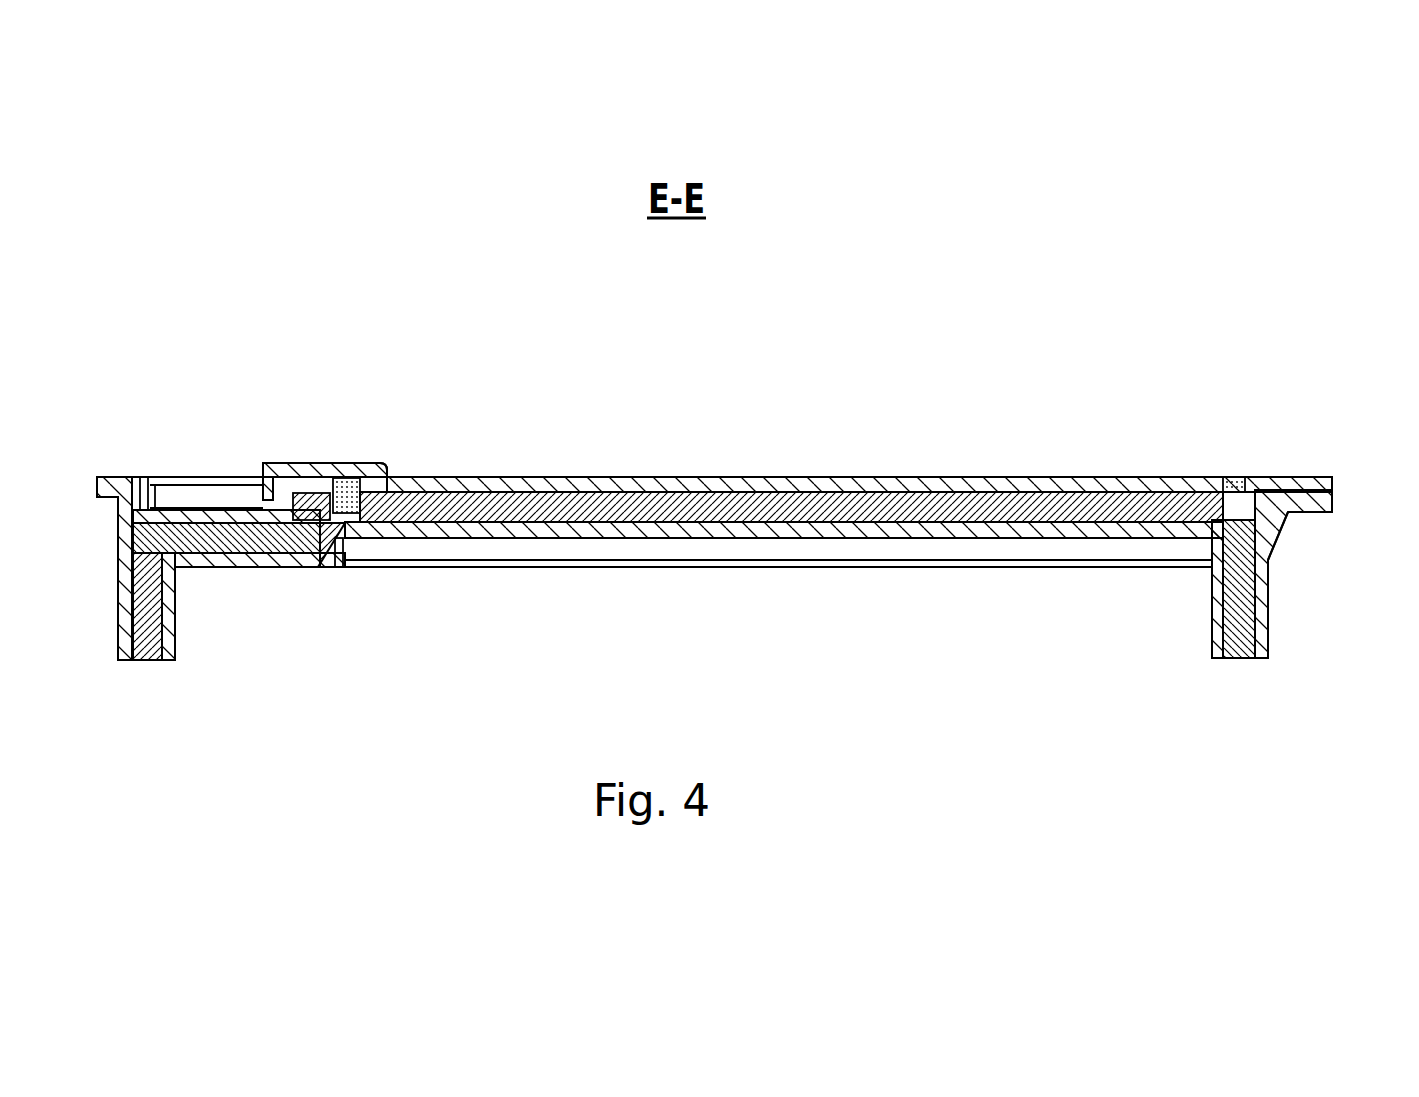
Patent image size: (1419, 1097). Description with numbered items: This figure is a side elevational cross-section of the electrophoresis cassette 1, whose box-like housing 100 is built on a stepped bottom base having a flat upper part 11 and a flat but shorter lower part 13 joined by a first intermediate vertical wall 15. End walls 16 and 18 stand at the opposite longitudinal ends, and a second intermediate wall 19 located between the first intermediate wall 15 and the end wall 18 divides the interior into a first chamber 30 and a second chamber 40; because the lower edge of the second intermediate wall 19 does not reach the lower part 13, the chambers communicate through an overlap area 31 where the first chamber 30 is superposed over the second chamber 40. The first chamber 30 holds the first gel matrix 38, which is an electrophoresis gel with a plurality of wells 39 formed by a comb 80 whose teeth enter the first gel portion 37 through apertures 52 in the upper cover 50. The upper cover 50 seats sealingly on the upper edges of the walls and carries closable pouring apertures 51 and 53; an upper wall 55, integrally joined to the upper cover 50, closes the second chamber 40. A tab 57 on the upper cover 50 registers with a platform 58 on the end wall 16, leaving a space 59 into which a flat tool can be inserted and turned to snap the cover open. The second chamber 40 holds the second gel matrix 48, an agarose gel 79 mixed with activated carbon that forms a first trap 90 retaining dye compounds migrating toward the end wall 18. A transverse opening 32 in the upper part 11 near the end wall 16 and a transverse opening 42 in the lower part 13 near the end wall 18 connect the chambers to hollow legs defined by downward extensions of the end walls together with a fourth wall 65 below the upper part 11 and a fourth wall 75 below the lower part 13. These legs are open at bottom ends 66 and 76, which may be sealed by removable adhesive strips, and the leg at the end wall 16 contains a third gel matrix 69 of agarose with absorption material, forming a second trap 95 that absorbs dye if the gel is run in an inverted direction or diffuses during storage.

The cassette 1 is at (779, 314).
The housing 100 is at (640, 452).
The upper part 11 is at (762, 530).
The lower part 13 is at (272, 570).
The first intermediate vertical wall 15 is at (352, 570).
The end wall 16 is at (1275, 490).
The end wall 18 is at (120, 560).
The second intermediate wall 19 is at (285, 470).
The first chamber 30 is at (778, 478).
The overlap area 31 is at (310, 562).
The transverse opening 32 is at (1210, 592).
The first gel portion 37 is at (330, 482).
The first gel matrix 38 is at (695, 478).
The wells 39 is at (400, 478).
The second chamber 40 is at (150, 492).
The transverse opening 42 is at (133, 478).
The second gel matrix 48 is at (243, 545).
The upper cover 50 is at (835, 478).
The closable aperture 51 is at (312, 478).
The apertures 52 is at (388, 465).
The closable aperture 53 is at (1232, 478).
The upper wall 55 is at (245, 480).
The tab 57 is at (1333, 476).
The platform 58 is at (1292, 540).
The space 59 is at (1330, 513).
The fourth wall 65 is at (1215, 620).
The bottom end 66 is at (1222, 662).
The third gel matrix 69 is at (1262, 625).
The fourth wall 75 is at (178, 608).
The bottom end 76 is at (148, 662).
The agarose gel 79 is at (140, 535).
The comb 80 is at (363, 482).
The first trap 90 is at (200, 500).
The second trap 95 is at (1258, 657).